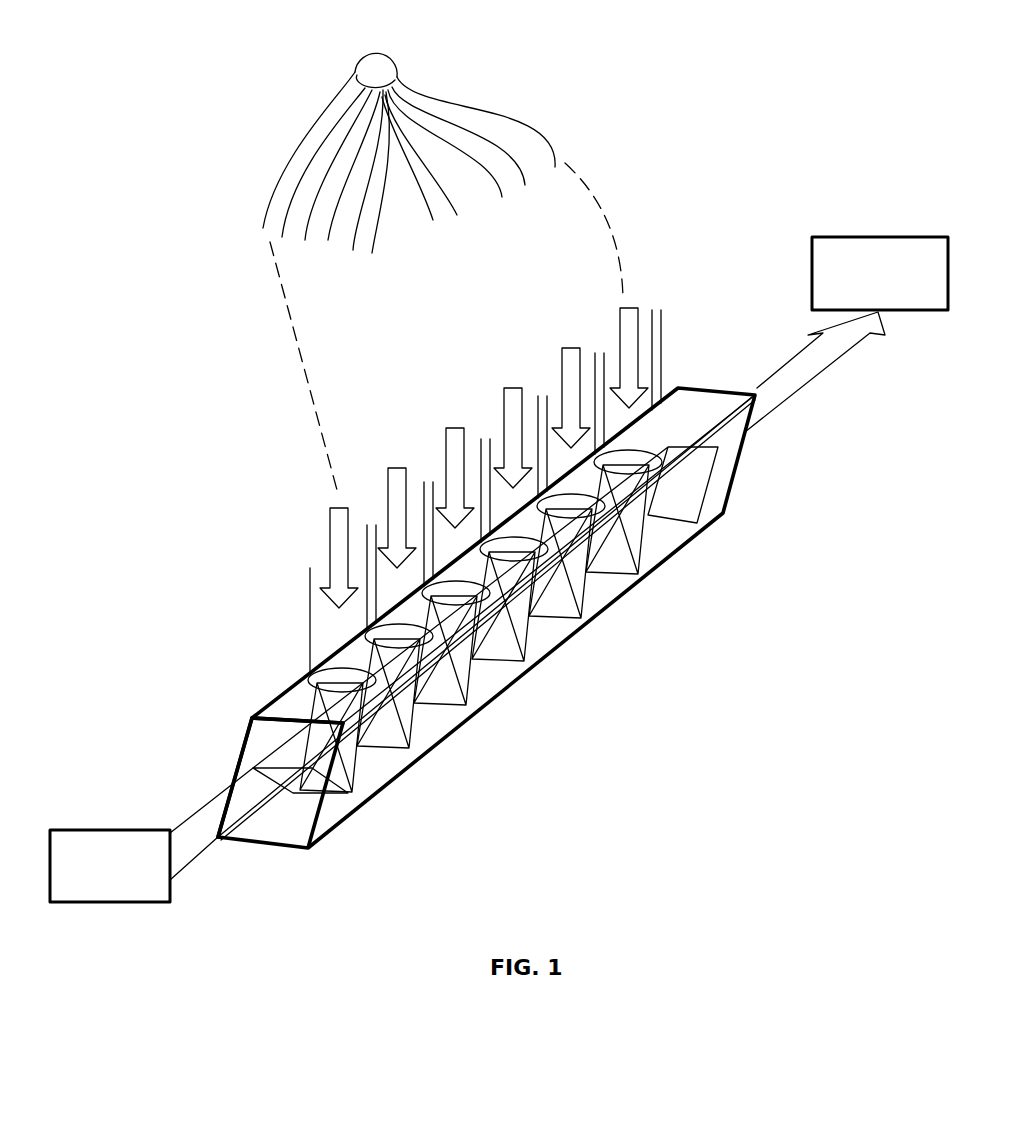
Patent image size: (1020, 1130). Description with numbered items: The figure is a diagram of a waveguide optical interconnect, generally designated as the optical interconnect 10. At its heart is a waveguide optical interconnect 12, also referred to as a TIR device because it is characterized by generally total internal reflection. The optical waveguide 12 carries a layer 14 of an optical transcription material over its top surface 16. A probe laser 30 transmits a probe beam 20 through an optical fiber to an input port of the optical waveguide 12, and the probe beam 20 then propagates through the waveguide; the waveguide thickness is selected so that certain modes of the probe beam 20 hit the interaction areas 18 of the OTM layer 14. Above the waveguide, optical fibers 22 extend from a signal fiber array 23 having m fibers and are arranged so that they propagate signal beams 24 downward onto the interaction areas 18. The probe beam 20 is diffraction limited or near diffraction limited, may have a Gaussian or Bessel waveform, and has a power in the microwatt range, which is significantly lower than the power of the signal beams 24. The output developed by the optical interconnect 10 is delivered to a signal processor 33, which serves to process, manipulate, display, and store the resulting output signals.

The optical interconnect 10 is at (852, 211).
The waveguide optical interconnect 12 is at (348, 805).
The layer of optical transcription material 14 is at (285, 708).
The top surface 16 is at (252, 720).
The interaction areas 18 is at (302, 673).
The probe beam 20 is at (207, 855).
The optical fibers 22 is at (278, 203).
The signal fiber array 23 is at (382, 68).
The signal beams 24 is at (633, 305).
The probe laser 30 is at (142, 893).
The signal processor 33 is at (913, 303).